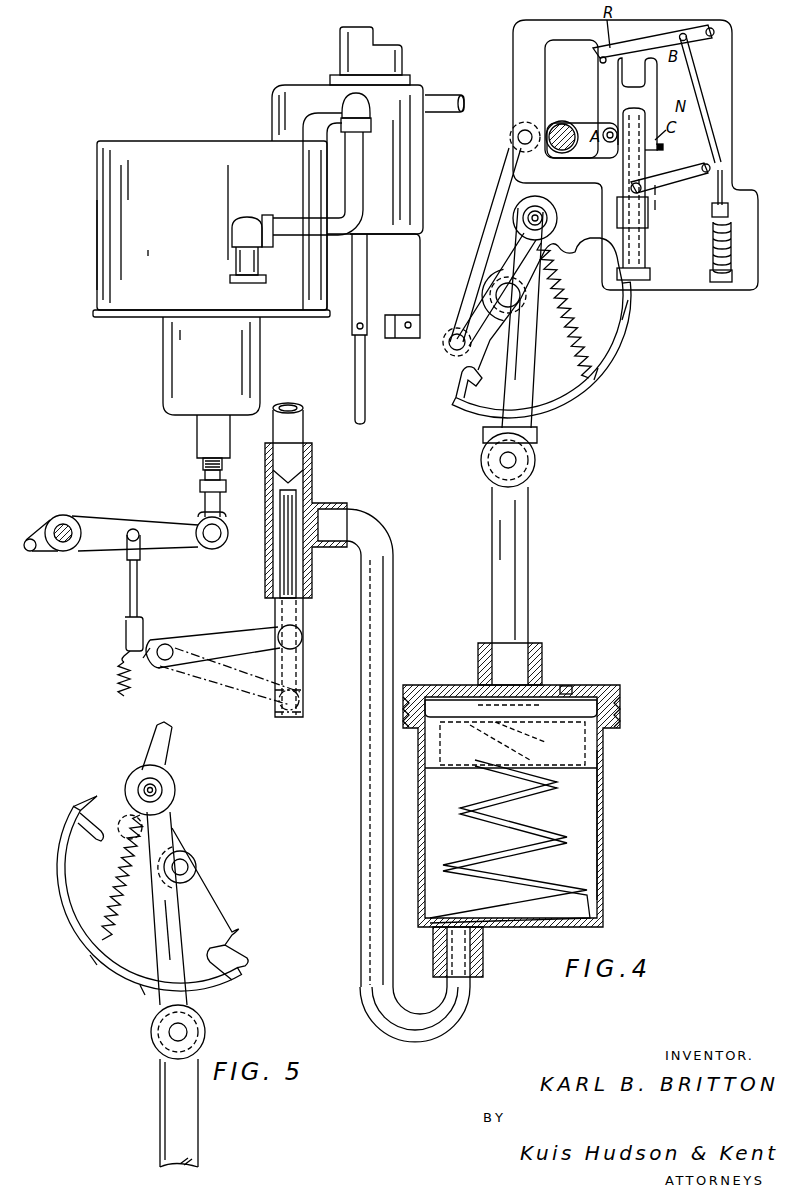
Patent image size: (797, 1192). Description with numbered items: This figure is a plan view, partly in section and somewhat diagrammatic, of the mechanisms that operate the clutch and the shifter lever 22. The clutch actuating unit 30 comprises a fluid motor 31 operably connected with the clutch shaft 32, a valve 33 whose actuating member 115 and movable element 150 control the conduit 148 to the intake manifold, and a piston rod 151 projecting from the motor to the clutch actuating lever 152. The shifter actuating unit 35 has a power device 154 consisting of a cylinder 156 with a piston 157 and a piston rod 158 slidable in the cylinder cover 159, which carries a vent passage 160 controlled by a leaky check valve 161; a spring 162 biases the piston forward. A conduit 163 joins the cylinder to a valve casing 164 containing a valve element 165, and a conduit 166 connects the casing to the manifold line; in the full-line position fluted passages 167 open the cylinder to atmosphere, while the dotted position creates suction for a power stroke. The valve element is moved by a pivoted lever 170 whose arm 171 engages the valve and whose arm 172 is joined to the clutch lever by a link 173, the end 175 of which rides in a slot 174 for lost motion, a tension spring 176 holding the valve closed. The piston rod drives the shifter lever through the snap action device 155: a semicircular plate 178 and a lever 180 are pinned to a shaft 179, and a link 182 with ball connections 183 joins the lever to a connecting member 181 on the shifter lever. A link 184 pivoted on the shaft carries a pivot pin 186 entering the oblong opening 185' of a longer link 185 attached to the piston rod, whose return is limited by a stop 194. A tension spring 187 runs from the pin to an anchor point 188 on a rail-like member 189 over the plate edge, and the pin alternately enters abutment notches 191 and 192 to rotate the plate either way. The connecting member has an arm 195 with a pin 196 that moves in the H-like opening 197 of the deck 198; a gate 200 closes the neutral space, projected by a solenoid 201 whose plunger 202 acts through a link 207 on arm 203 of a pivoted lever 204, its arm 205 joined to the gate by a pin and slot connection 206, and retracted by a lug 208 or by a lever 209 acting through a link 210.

In FIG. 4, the shifter lever 22 is at (564, 120).
In FIG. 4, the clutch actuating unit 30 is at (211, 267).
In FIG. 4, the fluid motor 31 is at (97, 246).
In FIG. 4, the clutch shaft 32 is at (58, 551).
In FIG. 4, the valve 33 is at (405, 120).
In FIG. 4, the shifter actuating unit 35 is at (458, 775).
In FIG. 4, the actuating member 115 is at (355, 360).
In FIG. 4, the conduit 148 is at (437, 98).
In FIG. 4, the movable element 150 is at (367, 270).
In FIG. 4, the piston rod 151 is at (197, 440).
In FIG. 4, the clutch actuating lever 152 is at (178, 548).
In FIG. 4, the power device 154 is at (604, 772).
In FIG. 4, the snap action device 155 is at (624, 338).
In FIG. 5, the snap action device 155 is at (62, 930).
In FIG. 4, the cylinder 156 is at (604, 832).
In FIG. 4, the piston 157 is at (600, 742).
In FIG. 4, the piston rod 158 is at (520, 590).
In FIG. 5, the piston rod 158 is at (160, 1090).
In FIG. 4, the cylinder cover 159 is at (585, 700).
In FIG. 4, the vent passage 160 is at (540, 728).
In FIG. 4, the leaky check valve 161 is at (566, 683).
In FIG. 4, the spring 162 is at (540, 795).
In FIG. 4, the conduit 163 is at (360, 760).
In FIG. 4, the valve casing 164 is at (312, 485).
In FIG. 4, the valve element 165 is at (303, 606).
In FIG. 4, the conduit 166 is at (303, 420).
In FIG. 4, the fluted passages 167 is at (280, 560).
In FIG. 4, the pivoted lever 170 is at (200, 636).
In FIG. 4, the arm 171 is at (302, 635).
In FIG. 4, the arm 172 is at (148, 663).
In FIG. 4, the link 173 is at (130, 572).
In FIG. 4, the slot 174 is at (126, 626).
In FIG. 4, the link end 175 is at (124, 652).
In FIG. 4, the tension spring 176 is at (118, 682).
In FIG. 4, the semicircular plate 178 is at (555, 400).
In FIG. 5, the semicircular plate 178 is at (190, 900).
In FIG. 4, the shaft 179 is at (486, 280).
In FIG. 4, the lever 180 is at (496, 295).
In FIG. 5, the lever 180 is at (177, 867).
In FIG. 4, the connecting member 181 is at (586, 123).
In FIG. 4, the link 182 is at (500, 197).
In FIG. 5, the link 182 is at (168, 740).
In FIG. 4, the ball connections 183 is at (510, 135).
In FIG. 4, the link 184 is at (510, 252).
In FIG. 4, the link 185 is at (542, 340).
In FIG. 5, the link 185 is at (213, 927).
In FIG. 4, the oblong opening 185' is at (545, 200).
In FIG. 5, the oblong opening 185' is at (150, 790).
In FIG. 4, the pivot pin 186 is at (543, 212).
In FIG. 4, the tension spring 187 is at (565, 298).
In FIG. 5, the tension spring 187 is at (112, 872).
In FIG. 4, the anchor point 188 is at (603, 372).
In FIG. 5, the anchor point 188 is at (92, 965).
In FIG. 4, the rail-like member 189 is at (633, 310).
In FIG. 5, the rail-like member 189 is at (142, 990).
In FIG. 4, the abutment notch 191 is at (445, 375).
In FIG. 5, the abutment notch 191 is at (112, 795).
In FIG. 4, the abutment notch 192 is at (575, 240).
In FIG. 5, the abutment notch 192 is at (240, 935).
In FIG. 4, the stop 194 is at (537, 432).
In FIG. 5, the stop 194 is at (178, 1032).
In FIG. 4, the arm 195 is at (610, 130).
In FIG. 4, the pin 196 is at (608, 144).
In FIG. 4, the H-like opening 197 is at (655, 100).
In FIG. 4, the deck 198 is at (722, 78).
In FIG. 4, the gate 200 is at (645, 158).
In FIG. 4, the solenoid 201 is at (712, 262).
In FIG. 4, the plunger 202 is at (730, 215).
In FIG. 4, the arm 203 is at (712, 166).
In FIG. 4, the pivoted lever 204 is at (712, 215).
In FIG. 4, the arm 205 is at (658, 190).
In FIG. 4, the pin and slot connection 206 is at (658, 205).
In FIG. 4, the link 207 is at (725, 180).
In FIG. 4, the lug 208 is at (664, 147).
In FIG. 4, the lever 209 is at (638, 45).
In FIG. 4, the link 210 is at (690, 70).